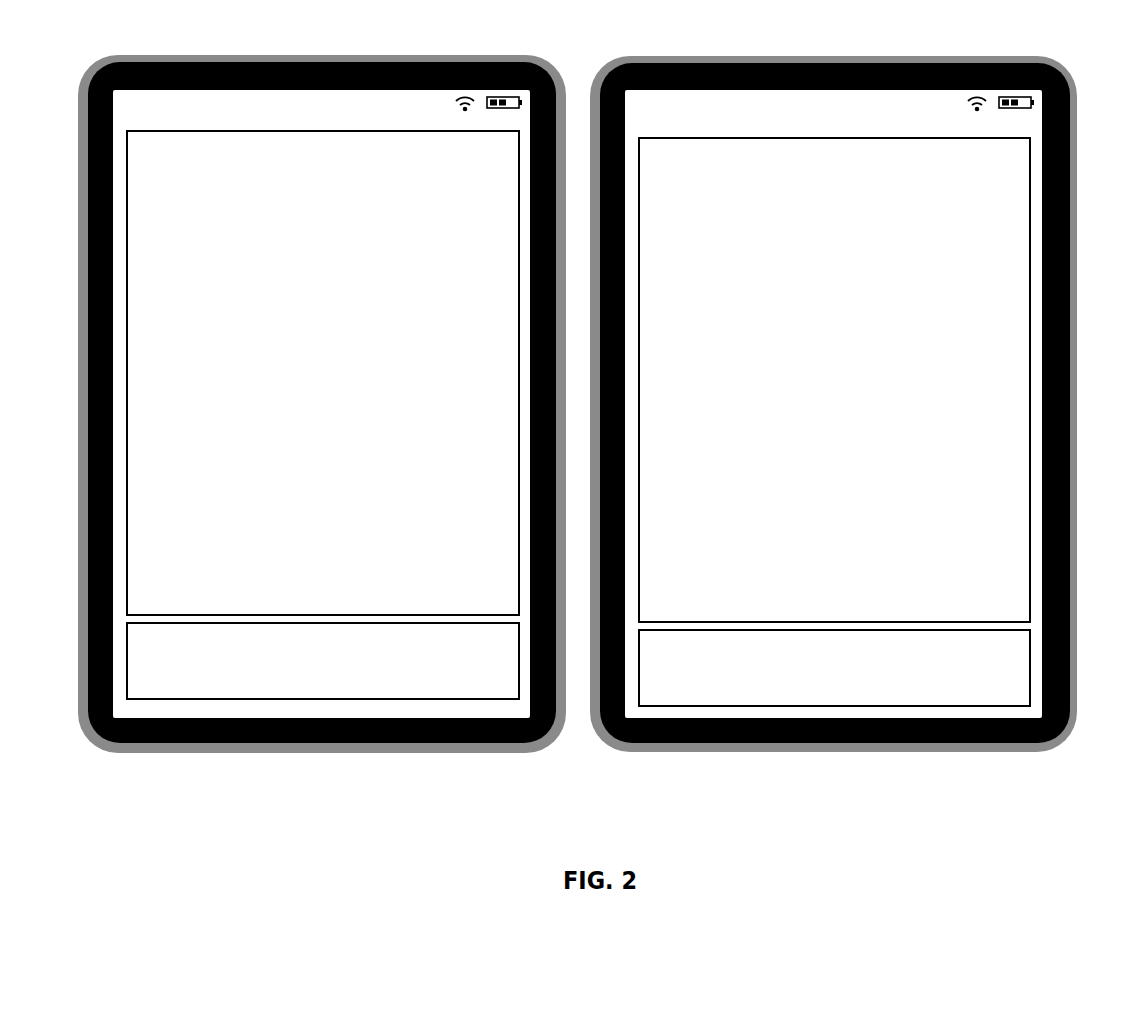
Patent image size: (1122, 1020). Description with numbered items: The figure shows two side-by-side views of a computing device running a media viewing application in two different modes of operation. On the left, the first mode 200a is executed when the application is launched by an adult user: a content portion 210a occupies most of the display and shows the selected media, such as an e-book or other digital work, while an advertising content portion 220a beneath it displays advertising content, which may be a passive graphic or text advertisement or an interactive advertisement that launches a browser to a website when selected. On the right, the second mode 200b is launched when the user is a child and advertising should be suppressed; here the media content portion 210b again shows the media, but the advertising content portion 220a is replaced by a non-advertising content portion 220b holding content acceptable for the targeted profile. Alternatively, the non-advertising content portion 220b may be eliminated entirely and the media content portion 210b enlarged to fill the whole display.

The first mode 200a is at (322, 438).
The second mode 200b is at (833, 434).
The content portion 210a is at (345, 406).
The media content portion 210b is at (857, 413).
The advertising content portion 220a is at (345, 681).
The non-advertising content portion 220b is at (857, 687).